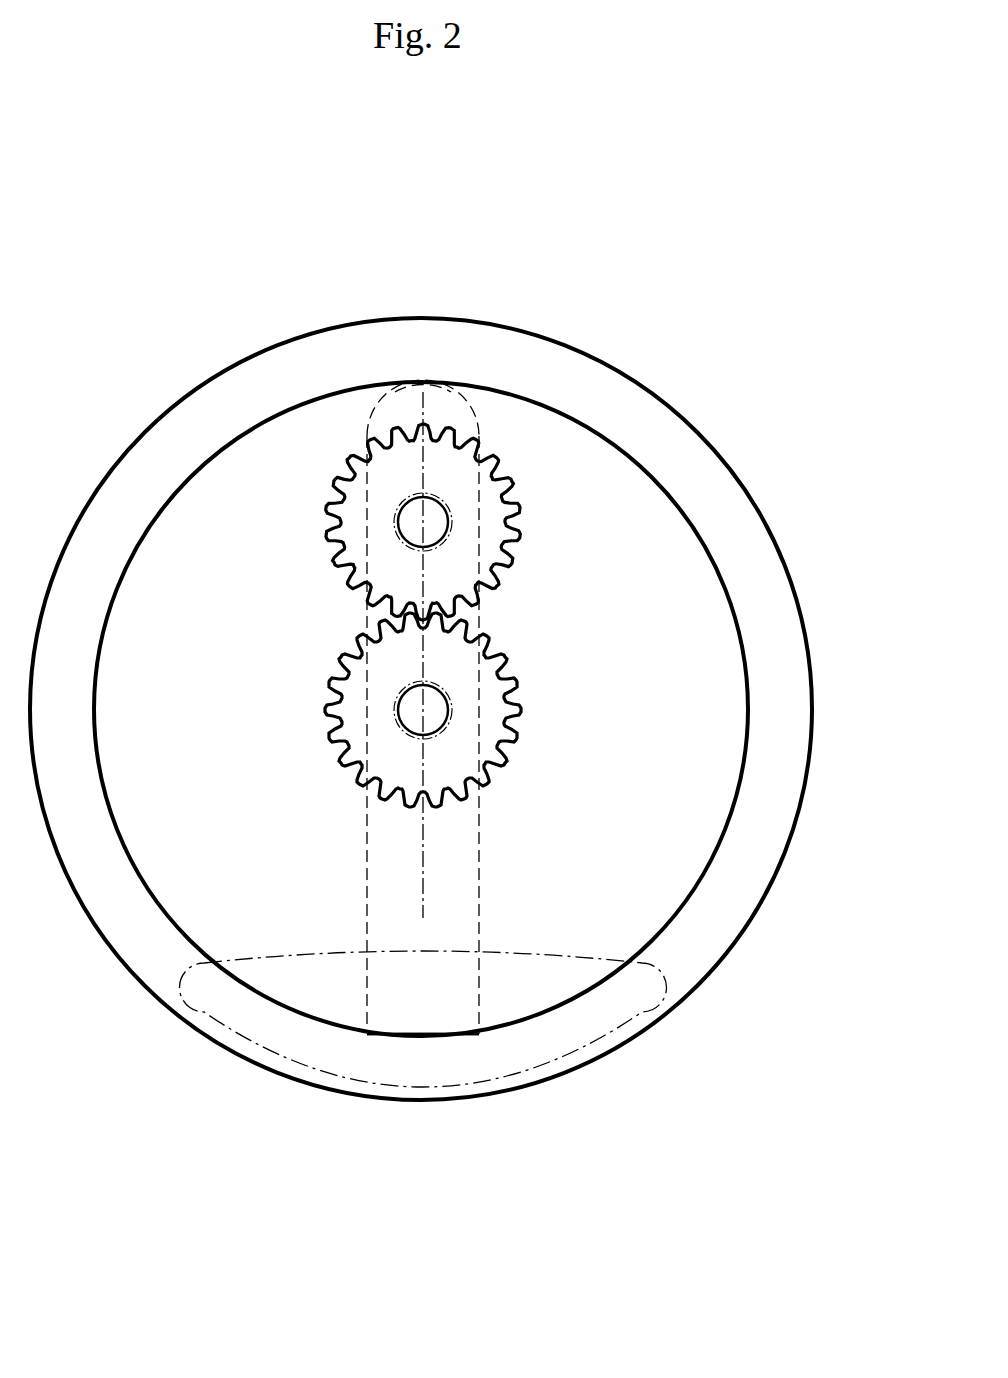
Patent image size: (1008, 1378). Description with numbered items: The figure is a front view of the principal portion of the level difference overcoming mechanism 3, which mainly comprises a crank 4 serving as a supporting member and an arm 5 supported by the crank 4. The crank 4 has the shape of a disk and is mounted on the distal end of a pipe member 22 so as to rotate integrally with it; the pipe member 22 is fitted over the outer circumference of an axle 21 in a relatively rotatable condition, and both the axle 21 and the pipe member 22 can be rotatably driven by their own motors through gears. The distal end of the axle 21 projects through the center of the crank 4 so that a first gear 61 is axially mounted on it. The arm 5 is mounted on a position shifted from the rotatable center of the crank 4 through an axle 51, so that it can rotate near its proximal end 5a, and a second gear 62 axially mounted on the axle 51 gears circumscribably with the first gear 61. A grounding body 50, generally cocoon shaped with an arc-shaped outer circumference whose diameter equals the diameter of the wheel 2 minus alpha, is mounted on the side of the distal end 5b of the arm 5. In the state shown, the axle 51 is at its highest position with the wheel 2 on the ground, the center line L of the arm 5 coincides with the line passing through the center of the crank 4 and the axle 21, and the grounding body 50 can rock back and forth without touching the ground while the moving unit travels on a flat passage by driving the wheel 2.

The wheel 2 is at (700, 412).
The level difference overcoming mechanism 3 is at (618, 600).
The crank 4 is at (772, 678).
The arm 5 is at (528, 886).
The proximal end 5a is at (424, 378).
The distal end 5b is at (478, 1036).
The axle 21 is at (397, 708).
The pipe member 22 is at (400, 689).
The grounding body 50 is at (667, 975).
The axle 51 is at (397, 522).
The first gear 61 is at (520, 690).
The second gear 62 is at (520, 503).
The center line L is at (423, 865).